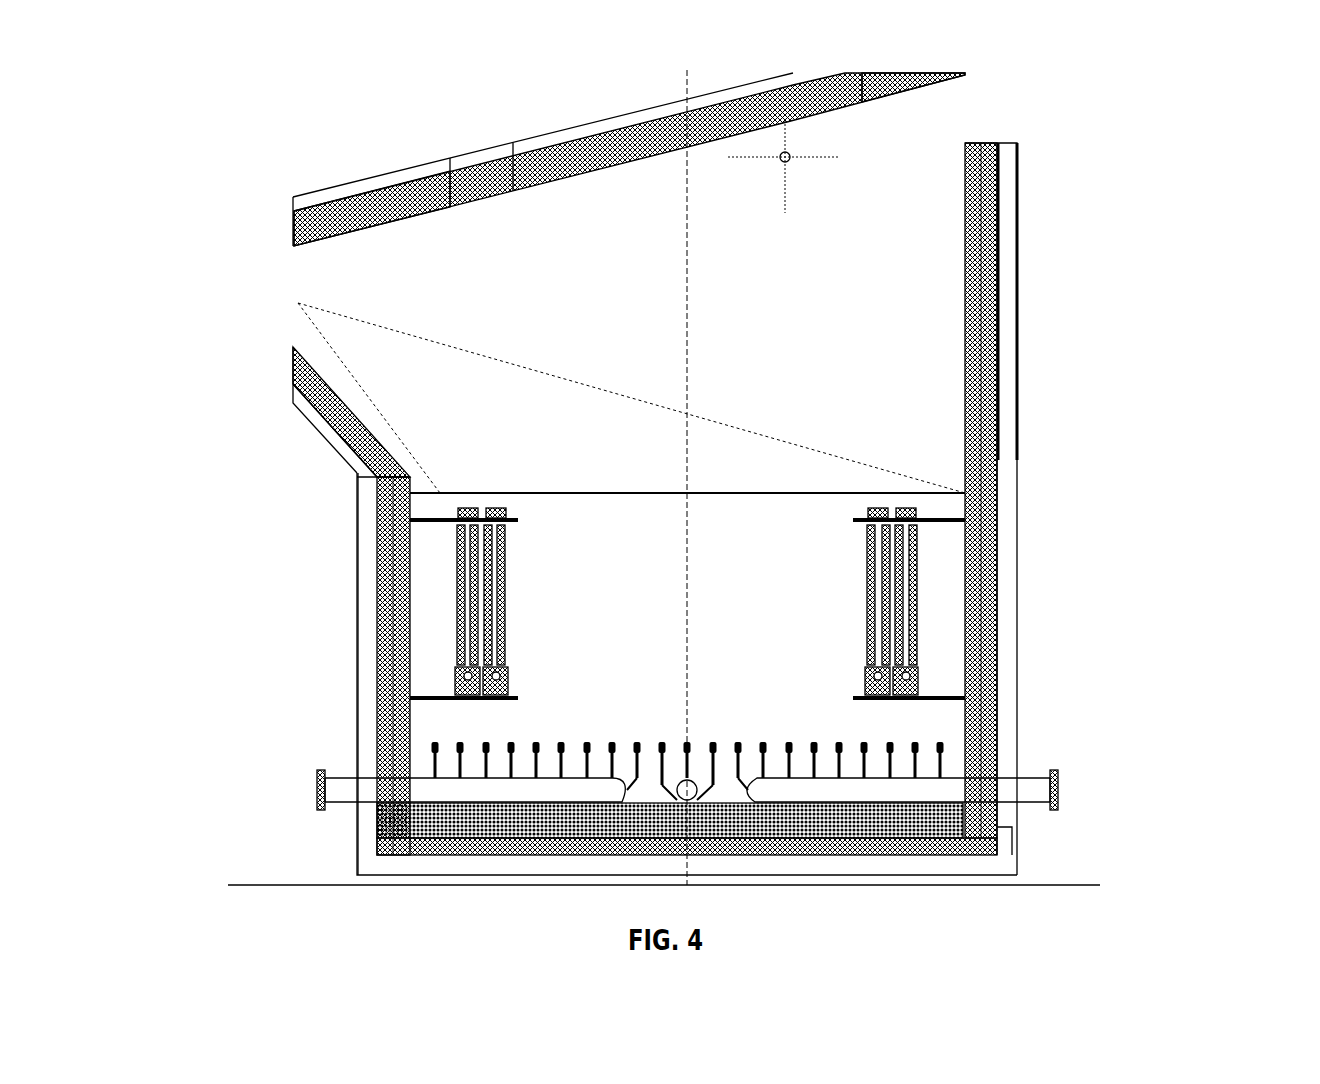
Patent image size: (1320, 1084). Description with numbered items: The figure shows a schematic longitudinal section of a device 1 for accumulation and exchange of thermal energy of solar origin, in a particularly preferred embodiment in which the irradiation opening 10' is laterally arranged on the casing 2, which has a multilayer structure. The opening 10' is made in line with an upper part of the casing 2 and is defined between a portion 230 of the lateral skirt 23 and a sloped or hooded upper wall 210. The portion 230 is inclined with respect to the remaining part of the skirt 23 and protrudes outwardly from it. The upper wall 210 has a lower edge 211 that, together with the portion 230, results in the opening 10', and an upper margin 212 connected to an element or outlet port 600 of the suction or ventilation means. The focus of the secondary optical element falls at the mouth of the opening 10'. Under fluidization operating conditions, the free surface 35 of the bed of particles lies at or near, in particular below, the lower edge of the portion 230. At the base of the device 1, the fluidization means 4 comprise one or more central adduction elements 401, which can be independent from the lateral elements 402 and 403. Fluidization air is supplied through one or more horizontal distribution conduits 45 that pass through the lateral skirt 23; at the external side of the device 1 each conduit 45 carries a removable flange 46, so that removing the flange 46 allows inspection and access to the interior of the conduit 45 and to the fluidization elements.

The device 1 is at (1222, 128).
The casing 2 is at (353, 678).
The fluidization means 4 is at (732, 706).
The irradiation opening 10' is at (536, 329).
The lateral skirt 23 is at (357, 580).
The free surface 35 is at (627, 493).
The distribution conduit 45 is at (405, 793).
The removable flange 46 is at (317, 792).
The upper wall 210 is at (555, 130).
The lower edge 211 is at (283, 232).
The upper margin 212 is at (972, 71).
The portion of the lateral skirt 230 is at (293, 400).
The central adduction element 401 is at (713, 782).
The lateral element 402 is at (435, 767).
The lateral element 403 is at (943, 767).
The outlet port 600 is at (1005, 124).